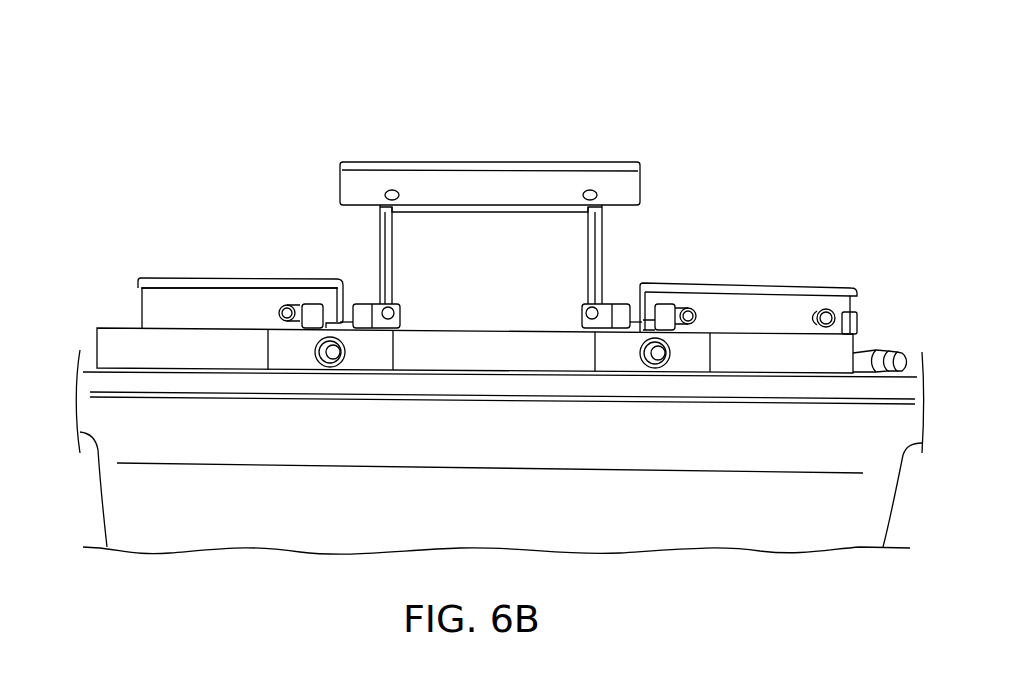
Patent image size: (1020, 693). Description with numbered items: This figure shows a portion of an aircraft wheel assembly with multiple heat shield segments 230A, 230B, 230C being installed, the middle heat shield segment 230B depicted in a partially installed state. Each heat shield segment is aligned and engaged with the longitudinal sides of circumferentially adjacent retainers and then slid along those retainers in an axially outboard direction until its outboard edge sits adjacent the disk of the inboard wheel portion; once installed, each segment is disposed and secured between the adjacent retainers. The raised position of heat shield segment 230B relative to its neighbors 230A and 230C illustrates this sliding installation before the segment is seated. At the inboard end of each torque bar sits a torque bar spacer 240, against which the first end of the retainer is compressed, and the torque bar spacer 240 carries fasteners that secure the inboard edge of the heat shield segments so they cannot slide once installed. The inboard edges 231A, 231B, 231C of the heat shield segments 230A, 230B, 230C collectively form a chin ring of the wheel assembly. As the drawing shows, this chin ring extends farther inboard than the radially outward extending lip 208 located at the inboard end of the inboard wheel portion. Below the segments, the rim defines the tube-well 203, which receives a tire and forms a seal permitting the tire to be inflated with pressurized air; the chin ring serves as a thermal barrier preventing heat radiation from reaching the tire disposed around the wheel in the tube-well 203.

The tube-well 203 is at (508, 502).
The radially outward extending lip 208 is at (130, 328).
The heat shield segment 230A is at (240, 248).
The heat shield segment 230B is at (490, 187).
The heat shield segment 230C is at (748, 264).
The inboard edge 231A is at (240, 277).
The inboard edge 231B is at (528, 168).
The inboard edge 231C is at (723, 223).
The torque bar spacer 240 is at (362, 307).